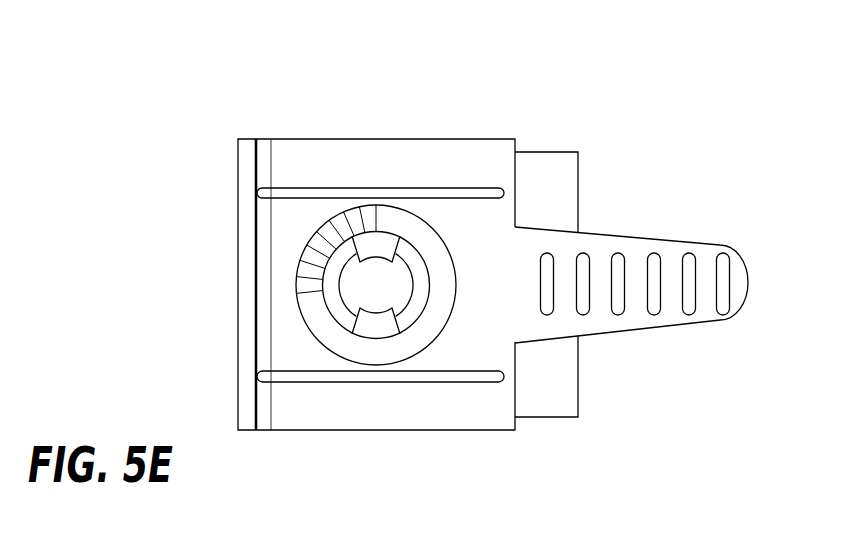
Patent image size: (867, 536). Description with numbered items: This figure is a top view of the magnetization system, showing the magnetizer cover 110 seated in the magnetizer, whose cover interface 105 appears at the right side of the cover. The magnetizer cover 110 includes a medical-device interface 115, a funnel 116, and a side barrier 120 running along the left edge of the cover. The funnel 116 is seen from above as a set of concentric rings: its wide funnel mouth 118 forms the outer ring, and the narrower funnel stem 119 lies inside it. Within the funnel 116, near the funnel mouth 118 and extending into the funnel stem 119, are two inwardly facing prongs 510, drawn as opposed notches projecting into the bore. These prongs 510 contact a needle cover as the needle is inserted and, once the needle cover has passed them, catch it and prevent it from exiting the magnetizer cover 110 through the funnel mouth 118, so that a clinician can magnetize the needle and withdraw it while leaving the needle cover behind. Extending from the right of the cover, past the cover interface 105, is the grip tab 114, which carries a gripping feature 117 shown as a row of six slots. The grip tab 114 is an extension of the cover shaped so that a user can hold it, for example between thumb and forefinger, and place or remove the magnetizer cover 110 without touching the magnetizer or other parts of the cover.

The magnetizer cover 110 is at (607, 131).
The cover interface 105 is at (560, 181).
The medical-device interface 115 is at (443, 170).
The gripping feature 117 is at (620, 275).
The grip tab 114 is at (655, 330).
The funnel 116 is at (445, 312).
The funnel mouth 118 is at (318, 315).
The funnel stem 119 is at (332, 272).
The inwardly facing prongs 510 is at (372, 245).
The side barrier 120 is at (250, 405).